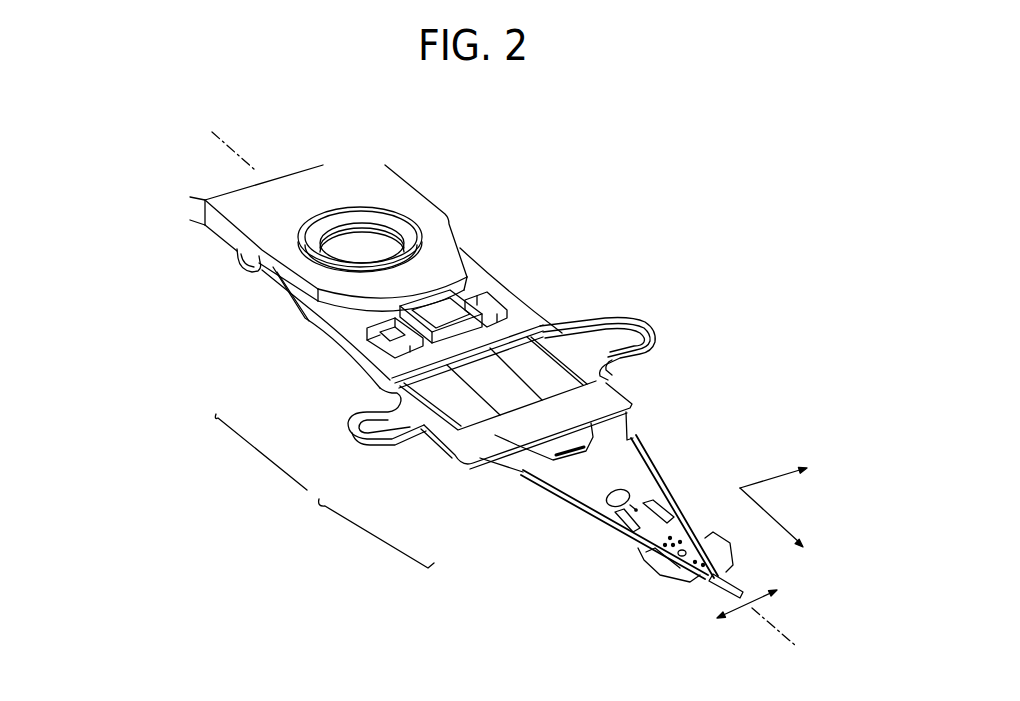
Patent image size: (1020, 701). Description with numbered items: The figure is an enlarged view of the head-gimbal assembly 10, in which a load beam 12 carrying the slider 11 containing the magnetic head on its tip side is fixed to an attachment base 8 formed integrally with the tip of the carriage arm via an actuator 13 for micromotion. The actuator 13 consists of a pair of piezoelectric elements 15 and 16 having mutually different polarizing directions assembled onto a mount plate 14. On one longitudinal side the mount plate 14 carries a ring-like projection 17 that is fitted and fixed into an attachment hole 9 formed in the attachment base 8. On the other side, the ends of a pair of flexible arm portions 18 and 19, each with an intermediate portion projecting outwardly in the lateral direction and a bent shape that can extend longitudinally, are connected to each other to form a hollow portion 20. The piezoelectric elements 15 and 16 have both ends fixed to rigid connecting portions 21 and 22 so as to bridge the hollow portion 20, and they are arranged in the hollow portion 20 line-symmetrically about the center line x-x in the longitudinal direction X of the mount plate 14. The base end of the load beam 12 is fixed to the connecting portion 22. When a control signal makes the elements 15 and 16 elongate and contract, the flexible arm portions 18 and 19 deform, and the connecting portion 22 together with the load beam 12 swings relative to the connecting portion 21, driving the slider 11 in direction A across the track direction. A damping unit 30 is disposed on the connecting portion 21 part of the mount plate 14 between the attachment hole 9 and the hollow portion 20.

The head-gimbal assembly 10 is at (137, 181).
The attachment base 8 is at (407, 200).
The attachment hole 9 is at (360, 218).
The ring-like projection 17 is at (403, 240).
The connecting portion 21 is at (480, 340).
The damping unit 30 is at (383, 315).
The connecting portion 22 is at (567, 415).
The piezoelectric element 15 is at (455, 402).
The piezoelectric element 16 is at (533, 372).
The hollow portion 20 is at (570, 363).
The flexible arm portion 19 is at (640, 333).
The flexible arm portion 18 is at (353, 417).
The mount plate 14 is at (372, 363).
The slider 11 is at (682, 582).
The load beam 12 is at (636, 480).
The actuator for micromotion 13 is at (324, 491).